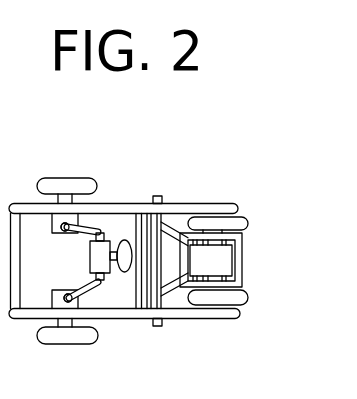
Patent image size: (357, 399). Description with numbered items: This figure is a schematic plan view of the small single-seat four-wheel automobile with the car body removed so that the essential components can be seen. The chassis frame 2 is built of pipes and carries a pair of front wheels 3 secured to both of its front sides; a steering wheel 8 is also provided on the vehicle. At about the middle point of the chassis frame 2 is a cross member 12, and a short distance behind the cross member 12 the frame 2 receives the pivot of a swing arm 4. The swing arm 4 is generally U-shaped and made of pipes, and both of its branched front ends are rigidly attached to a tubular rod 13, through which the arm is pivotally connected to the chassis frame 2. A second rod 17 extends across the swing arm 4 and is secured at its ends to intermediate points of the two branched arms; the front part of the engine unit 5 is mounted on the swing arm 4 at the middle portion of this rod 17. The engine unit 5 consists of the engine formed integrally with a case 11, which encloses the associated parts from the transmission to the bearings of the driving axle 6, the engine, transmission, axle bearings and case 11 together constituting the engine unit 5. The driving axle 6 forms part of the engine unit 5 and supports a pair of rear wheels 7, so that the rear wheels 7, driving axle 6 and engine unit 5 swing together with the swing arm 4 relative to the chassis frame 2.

The chassis frame 2 is at (106, 207).
The front wheels 3 is at (63, 183).
The swing arm 4 is at (238, 262).
The engine unit 5 is at (206, 239).
The driving axle 6 is at (237, 232).
The rear wheels 7 is at (242, 221).
The steering wheel 8 is at (115, 273).
The case 11 is at (192, 258).
The cross member 12 is at (138, 290).
The rod 13 is at (161, 270).
The rod 17 is at (193, 278).